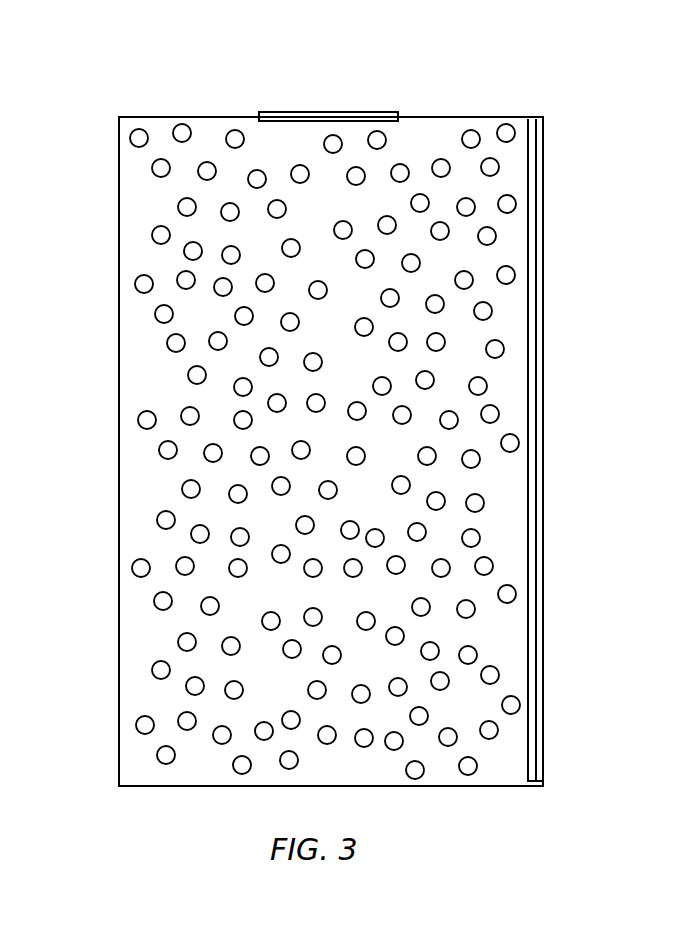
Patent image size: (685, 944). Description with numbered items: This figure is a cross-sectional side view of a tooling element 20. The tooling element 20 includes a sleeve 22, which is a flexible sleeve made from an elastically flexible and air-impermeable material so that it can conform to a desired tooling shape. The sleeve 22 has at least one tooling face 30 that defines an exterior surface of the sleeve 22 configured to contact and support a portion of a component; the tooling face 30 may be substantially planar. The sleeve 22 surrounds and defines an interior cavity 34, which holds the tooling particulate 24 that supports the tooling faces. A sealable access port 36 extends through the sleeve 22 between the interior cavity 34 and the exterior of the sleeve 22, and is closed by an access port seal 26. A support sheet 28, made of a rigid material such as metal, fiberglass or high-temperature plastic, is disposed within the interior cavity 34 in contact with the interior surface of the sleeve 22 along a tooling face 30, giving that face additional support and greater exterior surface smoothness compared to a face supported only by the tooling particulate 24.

The tooling element 20 is at (592, 117).
The sleeve 22 is at (543, 178).
The tooling particulate 24 is at (159, 451).
The access port seal 26 is at (350, 111).
The support sheet 28 is at (528, 349).
The tooling face 30 is at (118, 287).
The interior cavity 34 is at (147, 636).
The sealable access port 36 is at (416, 94).